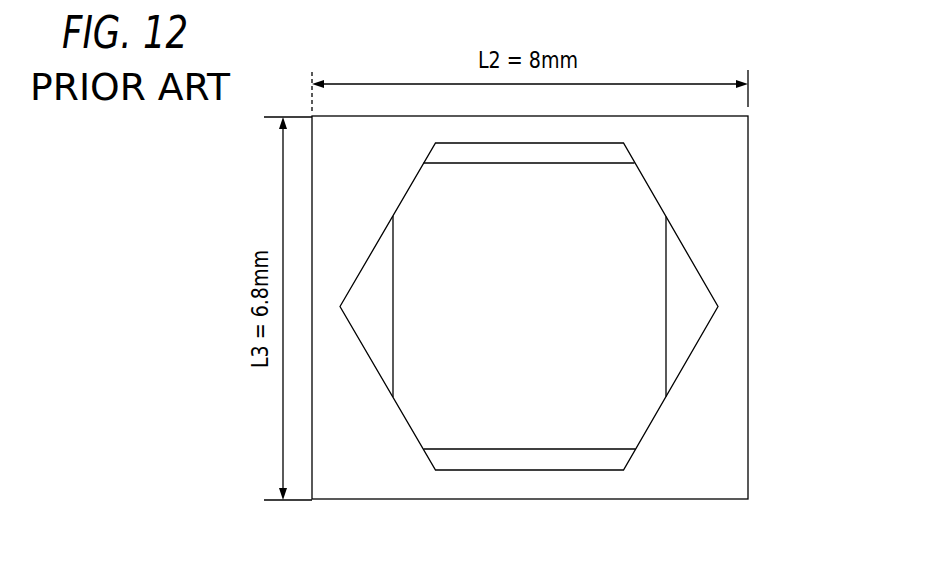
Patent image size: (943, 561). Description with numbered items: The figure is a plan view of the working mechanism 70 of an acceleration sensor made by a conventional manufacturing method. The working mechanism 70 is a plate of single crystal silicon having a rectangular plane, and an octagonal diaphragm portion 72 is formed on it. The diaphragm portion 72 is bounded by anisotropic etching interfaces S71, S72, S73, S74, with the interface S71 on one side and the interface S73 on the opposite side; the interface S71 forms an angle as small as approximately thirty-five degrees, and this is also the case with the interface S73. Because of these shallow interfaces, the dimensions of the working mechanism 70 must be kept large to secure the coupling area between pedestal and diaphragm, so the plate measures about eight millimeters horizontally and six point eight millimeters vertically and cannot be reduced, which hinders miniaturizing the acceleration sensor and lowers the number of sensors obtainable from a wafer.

The working mechanism 70 is at (748, 135).
The octagonal diaphragm portion 72 is at (617, 410).
The anisotropic etching interface S71 is at (692, 283).
The anisotropic etching interface S72 is at (467, 150).
The anisotropic etching interface S73 is at (368, 280).
The anisotropic etching interface S74 is at (533, 460).